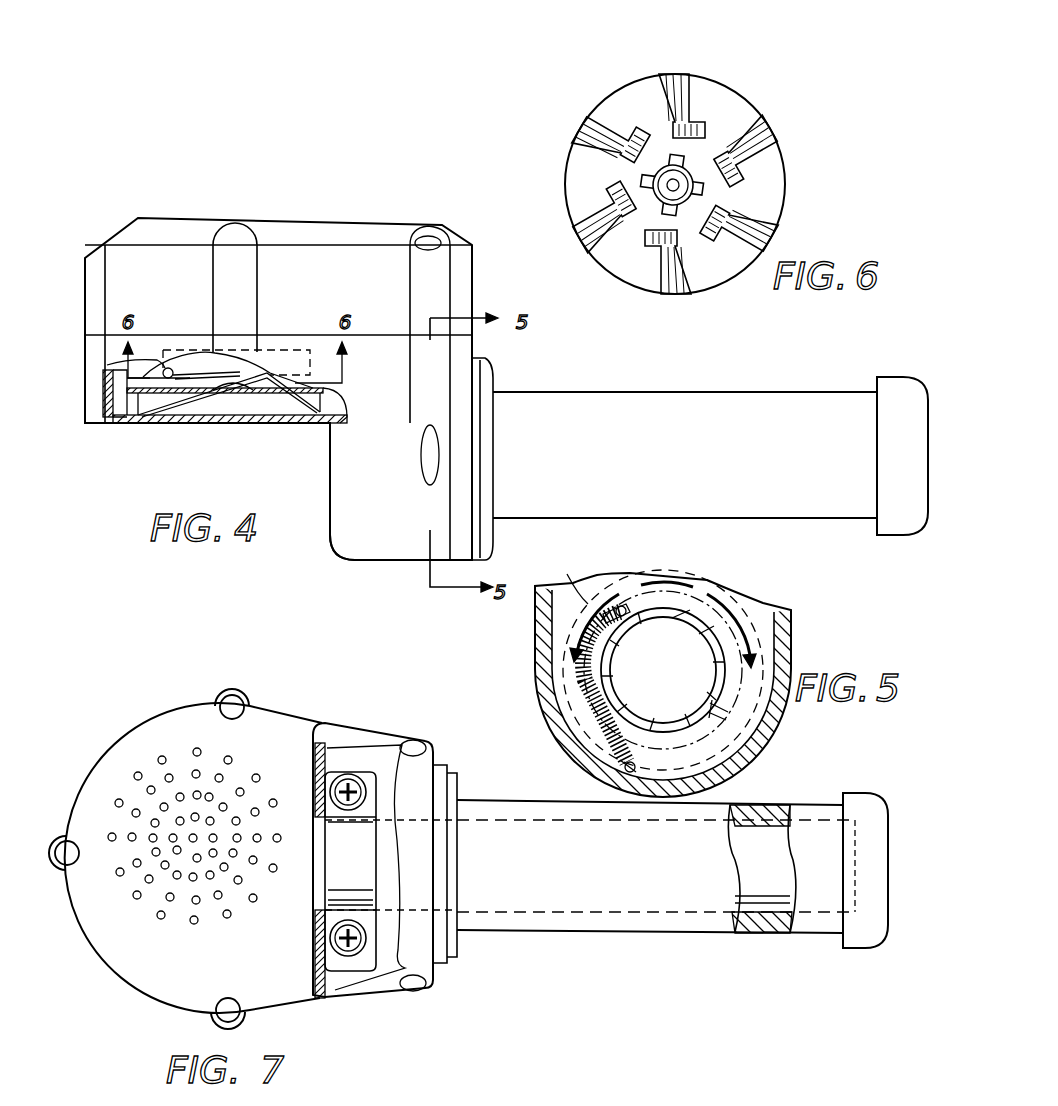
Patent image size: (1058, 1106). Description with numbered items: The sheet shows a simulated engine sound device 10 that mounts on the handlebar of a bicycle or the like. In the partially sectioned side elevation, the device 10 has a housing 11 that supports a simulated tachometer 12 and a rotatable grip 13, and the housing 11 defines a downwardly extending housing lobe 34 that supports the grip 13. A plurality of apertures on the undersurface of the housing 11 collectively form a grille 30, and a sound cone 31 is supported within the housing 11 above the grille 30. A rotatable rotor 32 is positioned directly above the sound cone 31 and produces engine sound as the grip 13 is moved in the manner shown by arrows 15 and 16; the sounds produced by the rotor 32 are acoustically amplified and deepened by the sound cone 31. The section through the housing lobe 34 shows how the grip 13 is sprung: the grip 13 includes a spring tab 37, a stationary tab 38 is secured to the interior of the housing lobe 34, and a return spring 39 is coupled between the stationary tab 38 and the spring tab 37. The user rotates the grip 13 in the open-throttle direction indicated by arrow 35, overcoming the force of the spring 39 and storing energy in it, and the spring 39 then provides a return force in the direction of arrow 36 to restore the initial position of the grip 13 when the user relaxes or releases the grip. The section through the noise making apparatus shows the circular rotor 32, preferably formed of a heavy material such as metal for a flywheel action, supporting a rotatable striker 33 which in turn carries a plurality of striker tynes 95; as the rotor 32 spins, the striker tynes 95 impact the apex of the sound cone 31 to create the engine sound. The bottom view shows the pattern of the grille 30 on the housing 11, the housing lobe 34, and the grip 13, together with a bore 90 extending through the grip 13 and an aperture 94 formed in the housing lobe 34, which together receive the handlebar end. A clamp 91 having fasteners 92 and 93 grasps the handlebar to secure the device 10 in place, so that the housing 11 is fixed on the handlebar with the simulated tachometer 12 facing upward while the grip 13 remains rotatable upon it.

In FIG. 4, the simulated engine sound device 10 is at (392, 204).
In FIG. 7, the simulated engine sound device 10 is at (488, 952).
In FIG. 4, the housing 11 is at (170, 262).
In FIG. 7, the housing 11 is at (280, 706).
In FIG. 4, the simulated tachometer 12 is at (215, 221).
In FIG. 4, the rotatable grip 13 is at (812, 392).
In FIG. 5, the rotatable grip 13 is at (688, 614).
In FIG. 7, the rotatable grip 13 is at (678, 903).
In FIG. 4, the arrow 15 is at (580, 462).
In FIG. 4, the arrow 16 is at (668, 420).
In FIG. 4, the grille 30 is at (183, 425).
In FIG. 7, the grille 30 is at (184, 752).
In FIG. 4, the sound cone 31 is at (278, 425).
In FIG. 4, the rotor 32 is at (138, 415).
In FIG. 6, the rotor 32 is at (604, 100).
In FIG. 6, the striker 33 is at (688, 172).
In FIG. 4, the housing lobe 34 is at (352, 547).
In FIG. 5, the housing lobe 34 is at (536, 716).
In FIG. 7, the housing lobe 34 is at (362, 733).
In FIG. 5, the arrow 35 is at (742, 604).
In FIG. 5, the arrow 36 is at (592, 612).
In FIG. 5, the spring tab 37 is at (624, 605).
In FIG. 5, the stationary tab 38 is at (638, 763).
In FIG. 5, the return spring 39 is at (575, 740).
In FIG. 7, the bore 90 is at (770, 933).
In FIG. 7, the clamp 91 is at (355, 878).
In FIG. 7, the fastener 92 is at (358, 790).
In FIG. 7, the fastener 93 is at (340, 955).
In FIG. 7, the aperture 94 is at (315, 898).
In FIG. 6, the striker tynes 95 is at (788, 208).